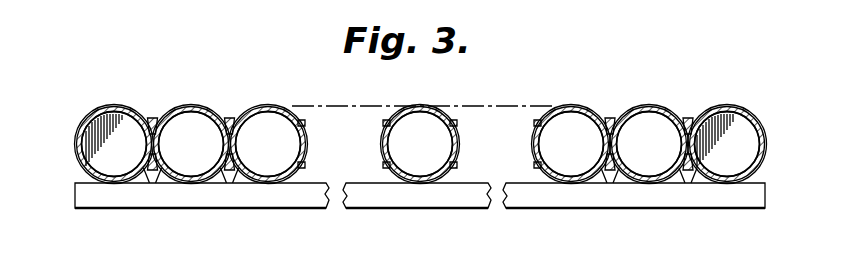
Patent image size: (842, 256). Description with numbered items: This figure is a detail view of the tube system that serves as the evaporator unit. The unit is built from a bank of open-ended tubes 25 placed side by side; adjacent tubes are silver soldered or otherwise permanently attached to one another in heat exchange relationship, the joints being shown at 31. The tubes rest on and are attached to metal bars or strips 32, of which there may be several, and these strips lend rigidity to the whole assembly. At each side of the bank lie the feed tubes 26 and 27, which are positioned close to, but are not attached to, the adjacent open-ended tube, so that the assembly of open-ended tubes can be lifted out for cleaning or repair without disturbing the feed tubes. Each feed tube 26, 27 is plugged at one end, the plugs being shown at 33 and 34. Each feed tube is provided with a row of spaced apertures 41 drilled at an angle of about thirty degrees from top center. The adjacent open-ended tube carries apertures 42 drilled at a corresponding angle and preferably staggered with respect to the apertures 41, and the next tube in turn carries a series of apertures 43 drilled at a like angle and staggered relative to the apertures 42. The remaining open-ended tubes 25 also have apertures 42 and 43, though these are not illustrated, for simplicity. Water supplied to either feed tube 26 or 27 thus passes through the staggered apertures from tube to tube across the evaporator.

The open-ended tubes 25 is at (232, 117).
The feed tube 26 is at (744, 112).
The feed tube 27 is at (110, 106).
The silver-soldered attachment 31 is at (230, 168).
The metal bars or strips 32 is at (277, 200).
The plug 33 is at (744, 140).
The plug 34 is at (97, 132).
The spaced apertures 41 is at (130, 113).
The apertures 42 is at (174, 111).
The apertures 43 is at (208, 113).